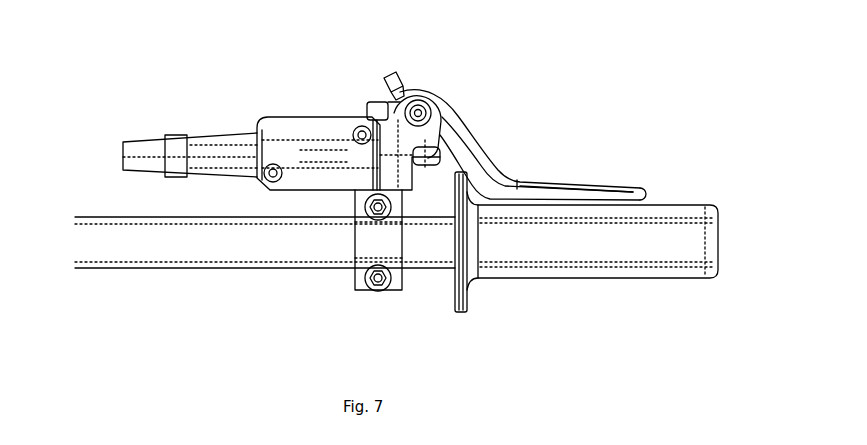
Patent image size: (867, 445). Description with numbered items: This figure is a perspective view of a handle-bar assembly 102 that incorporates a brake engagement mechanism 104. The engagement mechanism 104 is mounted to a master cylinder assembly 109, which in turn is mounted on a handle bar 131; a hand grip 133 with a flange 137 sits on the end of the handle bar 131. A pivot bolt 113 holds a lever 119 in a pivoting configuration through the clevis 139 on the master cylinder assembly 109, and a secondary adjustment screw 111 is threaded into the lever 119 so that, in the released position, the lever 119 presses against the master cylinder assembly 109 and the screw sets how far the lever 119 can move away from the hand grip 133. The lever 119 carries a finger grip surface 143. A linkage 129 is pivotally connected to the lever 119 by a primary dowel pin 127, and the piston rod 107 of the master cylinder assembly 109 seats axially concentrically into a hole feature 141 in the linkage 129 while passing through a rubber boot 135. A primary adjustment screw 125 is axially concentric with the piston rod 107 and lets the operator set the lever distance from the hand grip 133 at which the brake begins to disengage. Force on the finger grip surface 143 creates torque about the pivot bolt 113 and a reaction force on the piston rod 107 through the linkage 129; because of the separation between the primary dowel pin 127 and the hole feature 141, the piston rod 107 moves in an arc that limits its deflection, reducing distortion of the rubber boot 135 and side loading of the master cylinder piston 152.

The handle-bar assembly 102 is at (572, 75).
The engagement mechanism 104 is at (450, 98).
The piston rod 107 is at (350, 210).
The master cylinder assembly 109 is at (296, 117).
The secondary adjustment screw 111 is at (392, 71).
The pivot bolt 113 is at (420, 95).
The lever 119 is at (496, 152).
The primary adjustment screw 125 is at (537, 205).
The primary dowel pin 127 is at (505, 200).
The linkage 129 is at (425, 165).
The handle bar 131 is at (153, 272).
The hand grip 133 is at (686, 205).
The rubber boot 135 is at (352, 266).
The flange 137 is at (468, 293).
The clevis 139 is at (462, 121).
The hole feature 141 is at (388, 292).
The finger grip surface 143 is at (612, 180).
The master cylinder piston 152 is at (330, 138).